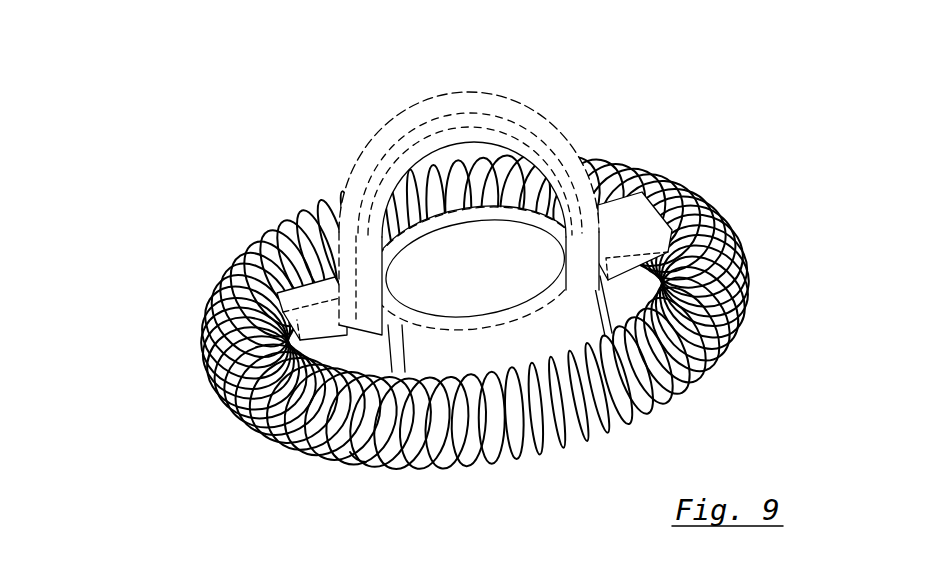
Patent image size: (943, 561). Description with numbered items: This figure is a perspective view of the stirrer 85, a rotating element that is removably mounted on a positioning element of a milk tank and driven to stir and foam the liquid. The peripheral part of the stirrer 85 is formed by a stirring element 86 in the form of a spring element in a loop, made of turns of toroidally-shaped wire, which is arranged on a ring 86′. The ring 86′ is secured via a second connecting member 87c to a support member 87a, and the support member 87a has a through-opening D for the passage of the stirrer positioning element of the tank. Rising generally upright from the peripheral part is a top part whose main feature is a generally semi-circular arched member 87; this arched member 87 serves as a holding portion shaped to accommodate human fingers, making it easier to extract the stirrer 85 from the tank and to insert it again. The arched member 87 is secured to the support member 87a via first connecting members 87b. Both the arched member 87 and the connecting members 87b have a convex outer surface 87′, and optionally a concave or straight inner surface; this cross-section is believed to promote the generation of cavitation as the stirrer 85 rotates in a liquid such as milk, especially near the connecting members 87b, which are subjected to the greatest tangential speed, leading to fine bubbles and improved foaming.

The stirrer 85 is at (233, 99).
The stirring element 86 is at (212, 385).
The ring 86′ is at (357, 457).
The arched member 87 is at (439, 177).
The convex outer surface 87′ is at (336, 216).
The support member 87a is at (735, 217).
The first connecting members 87b is at (600, 202).
The second connecting member 87c is at (634, 195).
The through-opening D is at (471, 283).